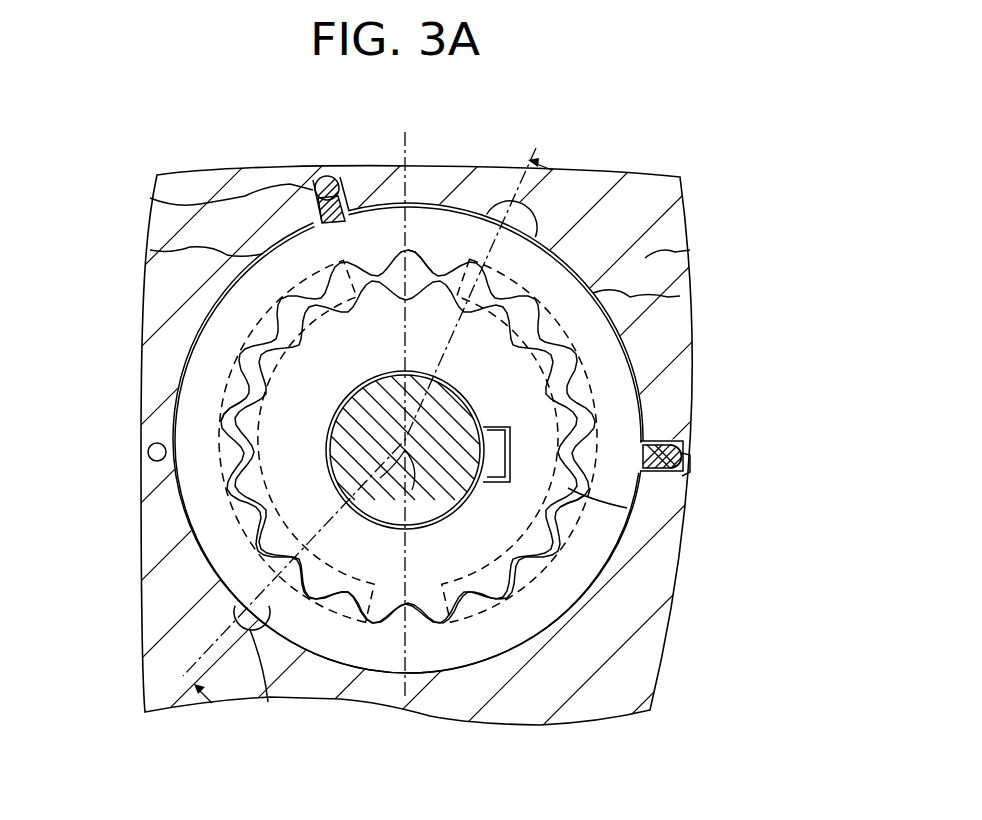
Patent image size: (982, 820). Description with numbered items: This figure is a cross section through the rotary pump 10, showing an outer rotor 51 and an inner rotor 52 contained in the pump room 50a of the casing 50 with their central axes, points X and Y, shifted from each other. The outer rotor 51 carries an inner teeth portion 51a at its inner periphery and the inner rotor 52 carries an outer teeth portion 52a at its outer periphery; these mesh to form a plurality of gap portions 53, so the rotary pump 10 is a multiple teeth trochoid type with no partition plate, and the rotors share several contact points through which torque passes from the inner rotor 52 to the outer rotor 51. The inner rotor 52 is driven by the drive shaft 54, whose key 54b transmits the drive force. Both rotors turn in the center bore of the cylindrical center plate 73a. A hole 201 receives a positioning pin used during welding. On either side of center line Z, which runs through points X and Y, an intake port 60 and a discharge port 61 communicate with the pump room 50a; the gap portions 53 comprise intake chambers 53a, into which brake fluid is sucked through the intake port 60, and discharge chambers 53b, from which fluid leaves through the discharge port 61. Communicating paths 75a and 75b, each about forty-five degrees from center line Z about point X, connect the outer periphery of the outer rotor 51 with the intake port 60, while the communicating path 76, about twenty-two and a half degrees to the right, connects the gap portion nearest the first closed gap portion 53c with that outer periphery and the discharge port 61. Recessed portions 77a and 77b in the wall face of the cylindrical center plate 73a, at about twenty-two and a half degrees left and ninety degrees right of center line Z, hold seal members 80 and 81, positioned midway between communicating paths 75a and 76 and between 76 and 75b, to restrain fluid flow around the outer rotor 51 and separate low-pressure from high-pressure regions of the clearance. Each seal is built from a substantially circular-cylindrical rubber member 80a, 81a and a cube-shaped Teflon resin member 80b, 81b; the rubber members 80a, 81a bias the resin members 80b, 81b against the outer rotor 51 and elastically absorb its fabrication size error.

The rotary pump 10 is at (567, 251).
The casing 50 is at (673, 215).
The pump room 50a is at (680, 296).
The outer rotor 51 is at (186, 483).
The inner teeth portion 51a is at (176, 444).
The inner rotor 52 is at (565, 582).
The outer teeth portion 52a is at (627, 508).
The gap portions 53 is at (590, 392).
The intake chambers 53a is at (240, 398).
The discharge chambers 53b is at (560, 503).
The first closed gap portion 53c is at (427, 262).
The drive shaft 54 is at (392, 530).
The key 54b is at (498, 427).
The intake port 60 is at (238, 511).
The discharge port 61 is at (594, 380).
The cylindrical center plate 73a is at (690, 250).
The communicating path 75a is at (150, 250).
The communicating path 75b is at (268, 702).
The communicating path 76 is at (460, 277).
The recessed portion 77a is at (150, 198).
The recessed portion 77b is at (690, 478).
The seal member 80 is at (387, 134).
The rubber member 80a is at (318, 178).
The resin member 80b is at (339, 180).
The seal member 81 is at (752, 377).
The rubber member 81a is at (660, 444).
The resin member 81b is at (684, 456).
The hole 201 is at (148, 454).